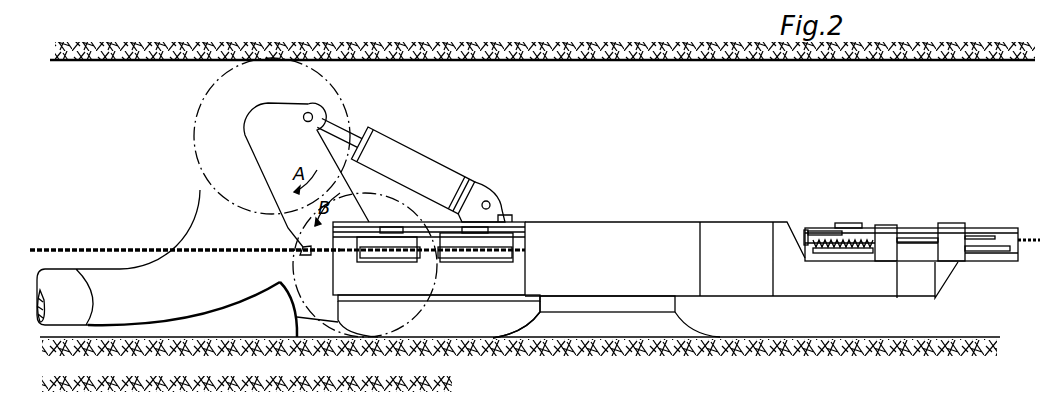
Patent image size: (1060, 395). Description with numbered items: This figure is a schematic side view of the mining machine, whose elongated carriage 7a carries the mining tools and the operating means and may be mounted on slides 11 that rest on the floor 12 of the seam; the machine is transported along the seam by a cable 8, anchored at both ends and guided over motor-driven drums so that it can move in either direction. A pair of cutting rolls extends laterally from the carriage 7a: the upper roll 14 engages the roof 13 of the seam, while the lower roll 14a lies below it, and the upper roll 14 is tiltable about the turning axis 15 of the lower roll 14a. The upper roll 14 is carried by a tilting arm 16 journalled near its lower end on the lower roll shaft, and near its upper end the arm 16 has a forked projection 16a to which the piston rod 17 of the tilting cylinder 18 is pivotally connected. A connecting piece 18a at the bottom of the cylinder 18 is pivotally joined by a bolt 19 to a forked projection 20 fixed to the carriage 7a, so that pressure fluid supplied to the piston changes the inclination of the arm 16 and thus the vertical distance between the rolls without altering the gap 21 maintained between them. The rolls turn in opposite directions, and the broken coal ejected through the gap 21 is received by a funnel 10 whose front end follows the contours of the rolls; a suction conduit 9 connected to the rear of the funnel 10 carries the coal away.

The elongated carriage 7a is at (782, 260).
The cable 8 is at (50, 247).
The suction conduit 9 is at (78, 284).
The funnel 10 is at (182, 233).
The slides 11 is at (683, 311).
The floor 12 is at (608, 342).
The roof 13 is at (596, 62).
The upper cutting roll 14 is at (200, 106).
The lower cutting roll 14a is at (399, 204).
The turning axis of the lower roll 15 is at (360, 268).
The tilting arm 16 is at (262, 142).
The forked projection 16a is at (306, 110).
The piston rod 17 is at (354, 129).
The tilting cylinder 18 is at (398, 151).
The connecting piece 18a is at (480, 186).
The bolt 19 is at (500, 210).
The forked projection 20 is at (508, 216).
The gap 21 is at (288, 218).